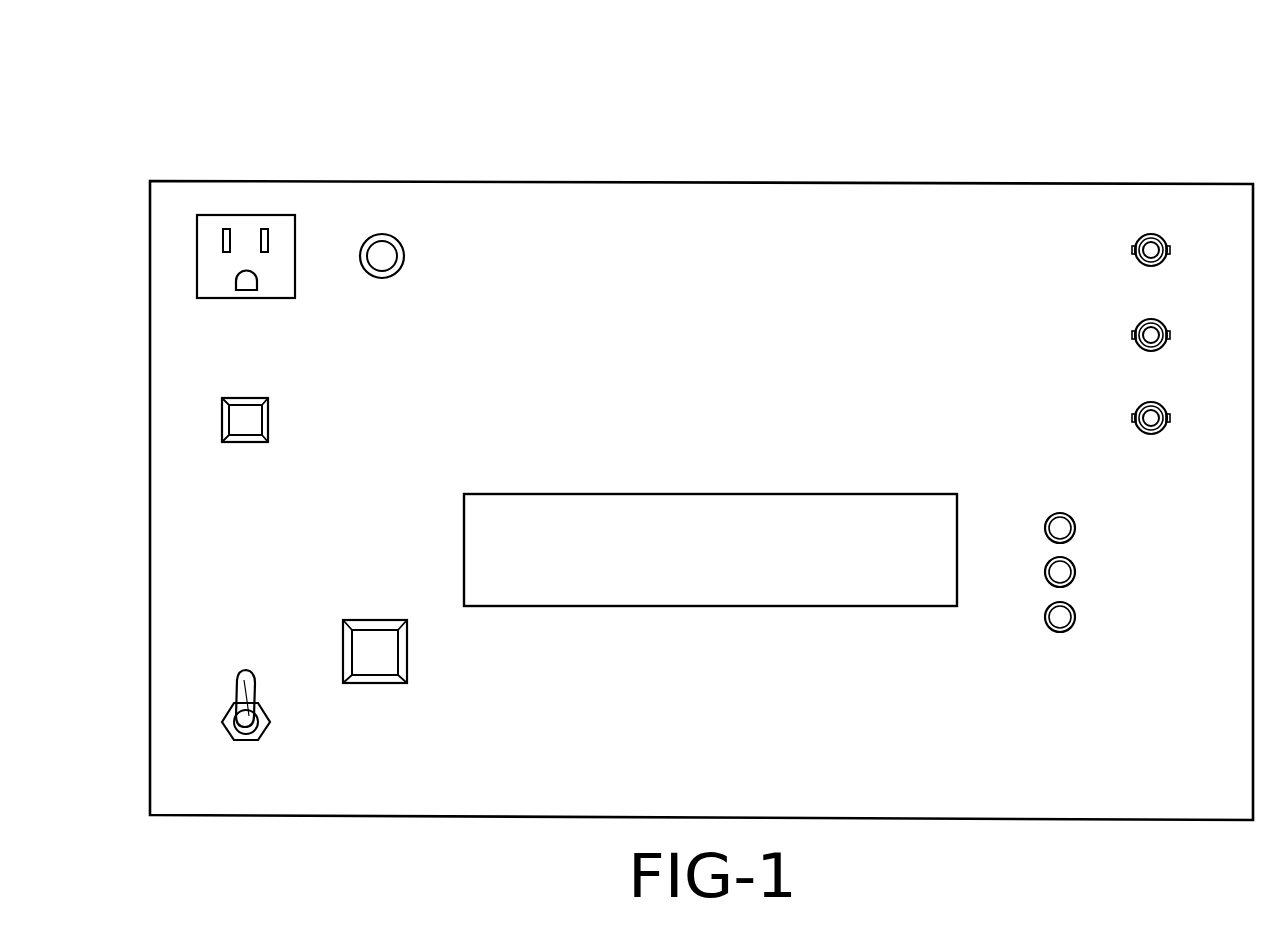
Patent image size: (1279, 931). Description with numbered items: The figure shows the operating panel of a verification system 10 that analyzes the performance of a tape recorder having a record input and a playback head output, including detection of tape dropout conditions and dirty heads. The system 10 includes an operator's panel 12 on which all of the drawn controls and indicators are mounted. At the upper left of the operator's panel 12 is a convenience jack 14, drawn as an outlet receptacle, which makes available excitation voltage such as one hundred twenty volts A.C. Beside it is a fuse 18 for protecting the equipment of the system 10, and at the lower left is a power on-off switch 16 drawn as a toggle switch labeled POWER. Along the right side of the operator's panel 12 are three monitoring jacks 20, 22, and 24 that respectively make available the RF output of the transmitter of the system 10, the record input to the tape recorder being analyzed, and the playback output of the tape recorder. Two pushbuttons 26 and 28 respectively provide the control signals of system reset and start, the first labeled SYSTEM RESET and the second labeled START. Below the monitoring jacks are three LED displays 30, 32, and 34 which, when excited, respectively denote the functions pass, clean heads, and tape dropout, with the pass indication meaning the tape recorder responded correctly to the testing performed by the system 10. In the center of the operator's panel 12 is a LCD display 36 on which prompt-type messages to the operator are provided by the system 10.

The system 10 is at (300, 140).
The operator's panel 12 is at (680, 183).
The convenience jack 14 is at (243, 298).
The power on-off switch 16 is at (236, 690).
The fuse 18 is at (382, 276).
The monitoring jack 20 is at (1141, 261).
The monitoring jack 22 is at (1141, 346).
The monitoring jack 24 is at (1141, 429).
The pushbutton 26 is at (243, 442).
The pushbutton 28 is at (374, 621).
The LED display 30 is at (1074, 521).
The LED display 32 is at (1074, 565).
The LED display 34 is at (1074, 610).
The LCD display 36 is at (553, 494).